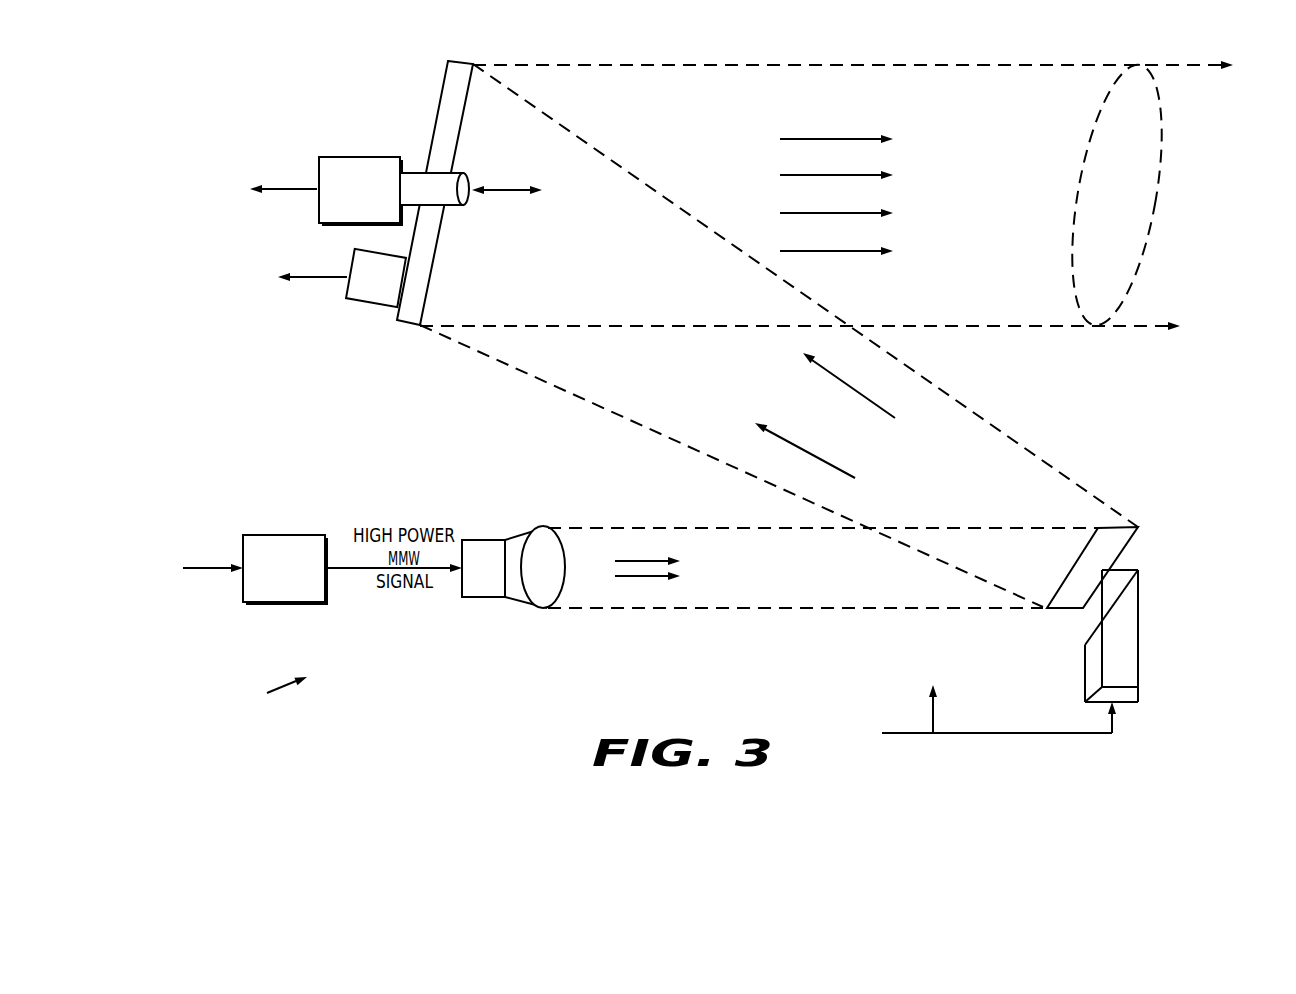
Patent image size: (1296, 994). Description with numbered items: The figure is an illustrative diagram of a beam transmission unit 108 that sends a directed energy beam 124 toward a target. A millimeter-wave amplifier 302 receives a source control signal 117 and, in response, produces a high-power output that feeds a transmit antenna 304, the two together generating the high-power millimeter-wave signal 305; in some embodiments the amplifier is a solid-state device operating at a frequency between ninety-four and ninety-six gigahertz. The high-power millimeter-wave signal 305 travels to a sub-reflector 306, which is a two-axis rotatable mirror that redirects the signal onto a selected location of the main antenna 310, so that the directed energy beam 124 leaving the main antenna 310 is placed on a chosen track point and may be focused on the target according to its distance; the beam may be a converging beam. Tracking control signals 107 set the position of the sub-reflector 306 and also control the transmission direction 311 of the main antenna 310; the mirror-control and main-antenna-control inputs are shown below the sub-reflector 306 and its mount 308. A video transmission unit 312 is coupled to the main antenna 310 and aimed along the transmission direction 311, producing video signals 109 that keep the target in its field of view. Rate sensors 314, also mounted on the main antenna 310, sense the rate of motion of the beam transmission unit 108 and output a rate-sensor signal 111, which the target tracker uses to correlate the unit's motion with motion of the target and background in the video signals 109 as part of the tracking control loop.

The tracking control signals 107 is at (882, 735).
The beam transmission unit 108 is at (272, 696).
The video signals 109 is at (277, 190).
The rate-sensor signal 111 is at (313, 276).
The source control signal 117 is at (213, 567).
The directed energy beam 124 is at (1014, 201).
The millimeter-wave amplifier 302 is at (282, 535).
The transmit antenna 304 is at (513, 567).
The high-power millimeter-wave signal 305 is at (782, 580).
The sub-reflector 306 is at (1062, 611).
The mirror actuator 308 is at (1138, 660).
The main antenna 310 is at (438, 105).
The transmission direction 311 is at (503, 188).
The video transmission unit 312 is at (357, 157).
The rate sensors 314 is at (371, 309).